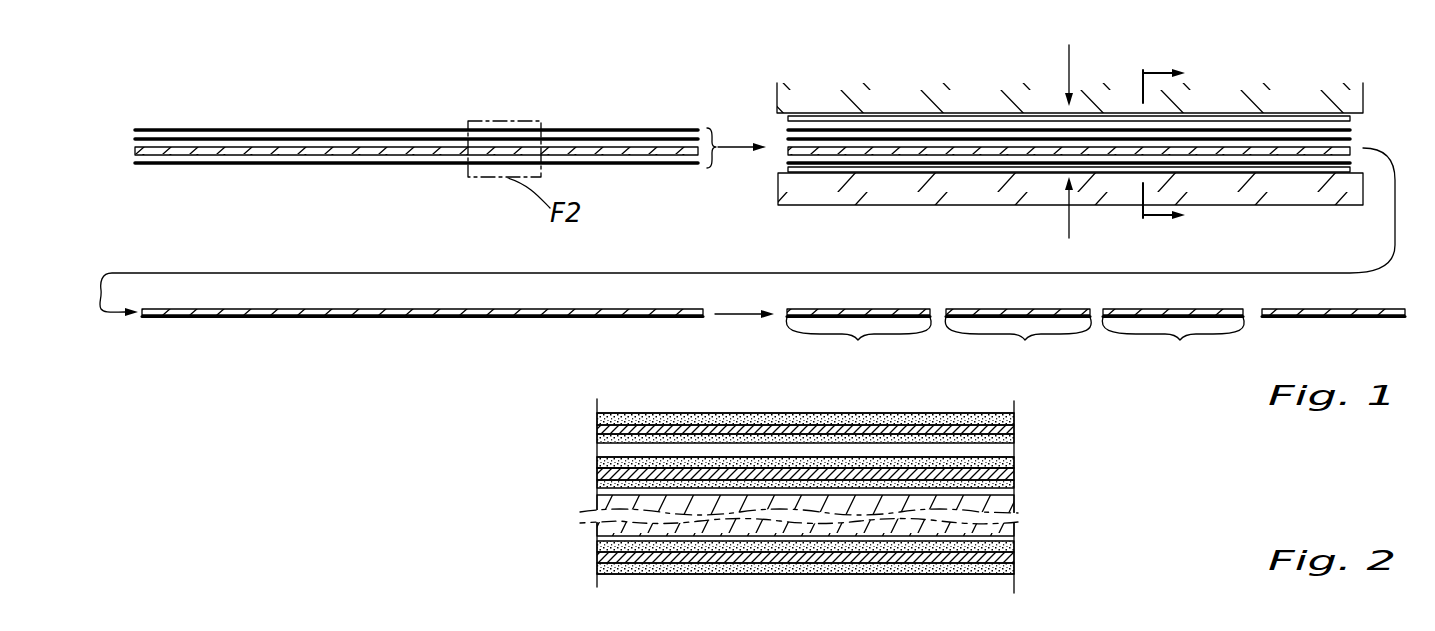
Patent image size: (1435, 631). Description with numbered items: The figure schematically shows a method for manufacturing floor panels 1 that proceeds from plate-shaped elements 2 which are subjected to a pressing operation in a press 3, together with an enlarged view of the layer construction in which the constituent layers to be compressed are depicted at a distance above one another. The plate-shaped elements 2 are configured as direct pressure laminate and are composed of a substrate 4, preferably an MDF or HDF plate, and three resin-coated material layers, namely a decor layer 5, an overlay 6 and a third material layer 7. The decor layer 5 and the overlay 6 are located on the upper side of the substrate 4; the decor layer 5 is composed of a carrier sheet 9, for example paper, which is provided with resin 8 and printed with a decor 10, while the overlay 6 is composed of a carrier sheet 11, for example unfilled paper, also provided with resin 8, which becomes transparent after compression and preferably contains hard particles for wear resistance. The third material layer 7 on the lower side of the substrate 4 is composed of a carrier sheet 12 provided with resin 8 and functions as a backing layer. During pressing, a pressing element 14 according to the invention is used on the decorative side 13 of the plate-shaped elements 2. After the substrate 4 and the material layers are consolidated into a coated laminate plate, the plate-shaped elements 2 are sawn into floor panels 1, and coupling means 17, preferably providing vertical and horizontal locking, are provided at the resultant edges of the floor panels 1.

In FIG. 1, the floor panels 1 is at (850, 308).
In FIG. 1, the plate-shaped elements 2 is at (757, 214).
In FIG. 2, the plate-shaped elements 2 is at (750, 491).
In FIG. 1, the press 3 is at (1360, 78).
In FIG. 1, the substrate 4 is at (141, 152).
In FIG. 2, the substrate 4 is at (1028, 496).
In FIG. 1, the decor layer 5 is at (615, 139).
In FIG. 2, the decor layer 5 is at (805, 463).
In FIG. 1, the overlay 6 is at (573, 130).
In FIG. 2, the overlay 6 is at (847, 409).
In FIG. 1, the third material layer 7 is at (593, 164).
In FIG. 2, the third material layer 7 is at (843, 578).
In FIG. 2, the resin 8 is at (628, 457).
In FIG. 2, the carrier sheet 9 is at (600, 476).
In FIG. 2, the decor 10 is at (598, 468).
In FIG. 2, the carrier sheet 11 is at (848, 430).
In FIG. 2, the carrier sheet 12 is at (833, 563).
In FIG. 1, the decorative side 13 is at (512, 307).
In FIG. 1, the pressing element 14 is at (775, 118).
In FIG. 1, the coupling means 17 is at (1420, 300).